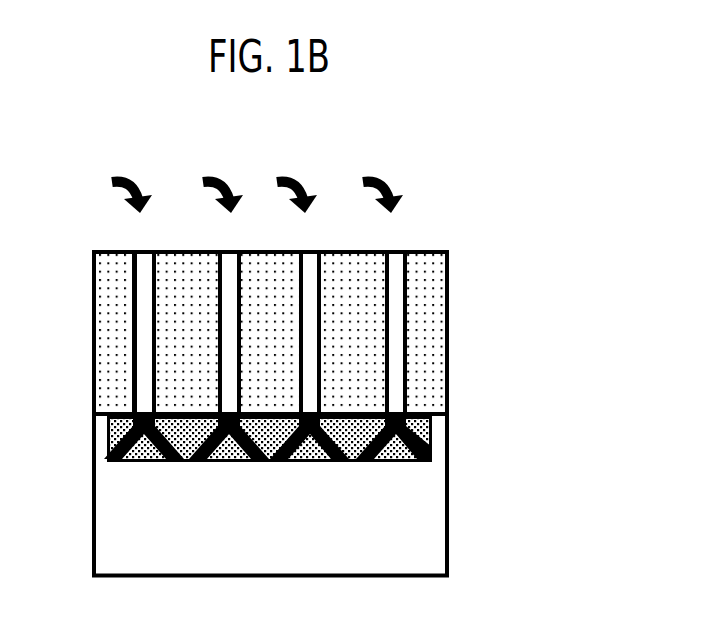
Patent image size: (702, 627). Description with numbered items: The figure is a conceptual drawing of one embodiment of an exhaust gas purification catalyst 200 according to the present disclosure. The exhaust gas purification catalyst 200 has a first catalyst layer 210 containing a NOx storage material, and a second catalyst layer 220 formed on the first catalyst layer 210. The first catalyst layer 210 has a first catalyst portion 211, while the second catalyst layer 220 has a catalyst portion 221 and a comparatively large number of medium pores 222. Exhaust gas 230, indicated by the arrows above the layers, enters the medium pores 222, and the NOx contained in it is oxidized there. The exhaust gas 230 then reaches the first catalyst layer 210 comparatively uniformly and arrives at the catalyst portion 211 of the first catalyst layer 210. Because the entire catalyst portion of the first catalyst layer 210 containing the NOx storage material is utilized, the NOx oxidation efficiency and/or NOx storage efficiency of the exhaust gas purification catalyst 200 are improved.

The exhaust gas purification catalyst 200 is at (497, 165).
The first catalyst layer 210 is at (453, 418).
The first catalyst portion 211 is at (85, 413).
The second catalyst layer 220 is at (453, 252).
The catalyst portion 221 is at (133, 246).
The medium pores 222 is at (133, 246).
The exhaust gas 230 is at (288, 180).